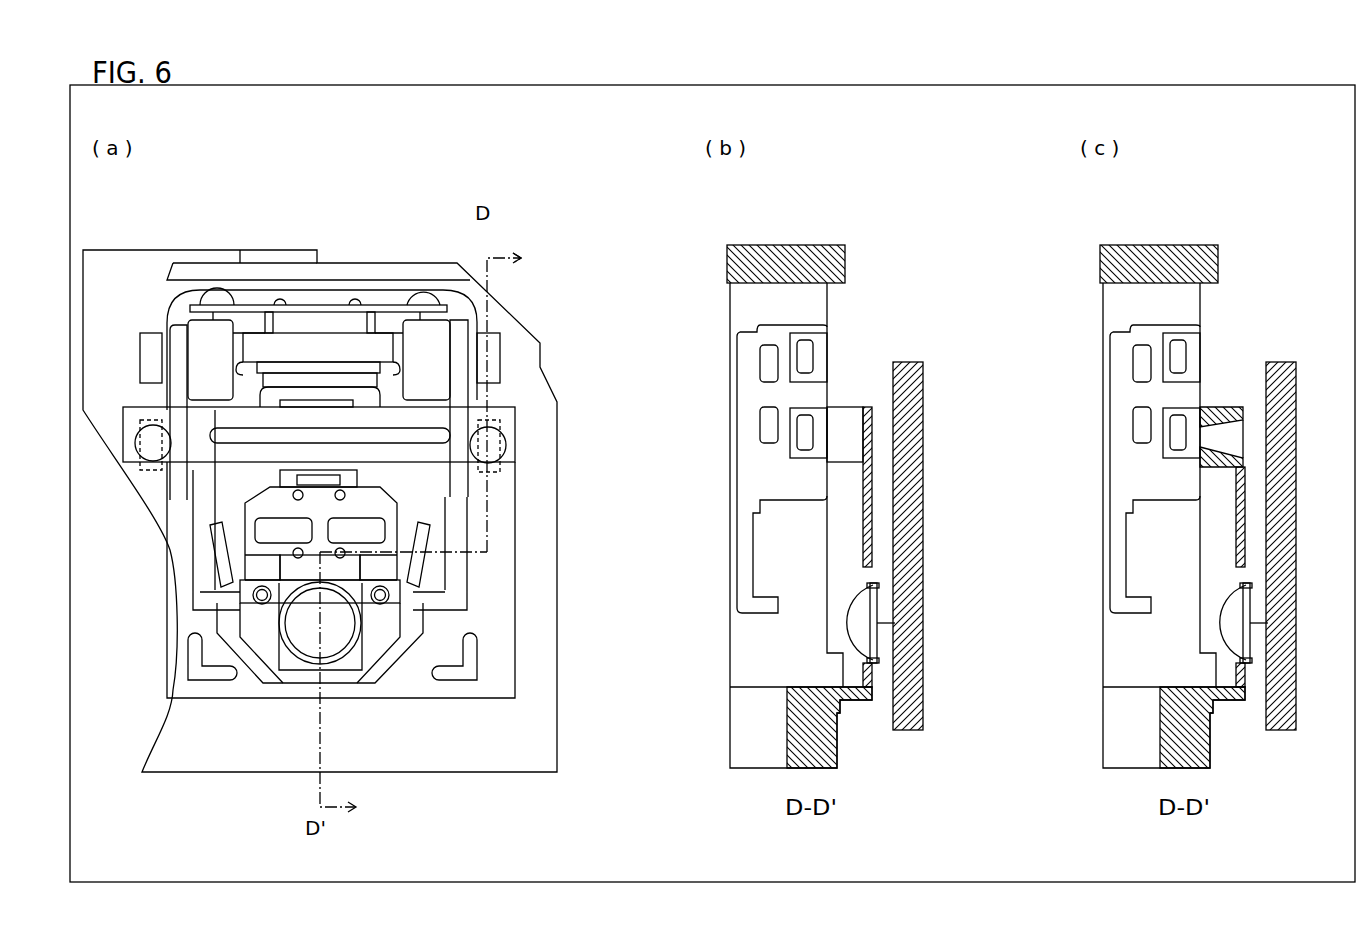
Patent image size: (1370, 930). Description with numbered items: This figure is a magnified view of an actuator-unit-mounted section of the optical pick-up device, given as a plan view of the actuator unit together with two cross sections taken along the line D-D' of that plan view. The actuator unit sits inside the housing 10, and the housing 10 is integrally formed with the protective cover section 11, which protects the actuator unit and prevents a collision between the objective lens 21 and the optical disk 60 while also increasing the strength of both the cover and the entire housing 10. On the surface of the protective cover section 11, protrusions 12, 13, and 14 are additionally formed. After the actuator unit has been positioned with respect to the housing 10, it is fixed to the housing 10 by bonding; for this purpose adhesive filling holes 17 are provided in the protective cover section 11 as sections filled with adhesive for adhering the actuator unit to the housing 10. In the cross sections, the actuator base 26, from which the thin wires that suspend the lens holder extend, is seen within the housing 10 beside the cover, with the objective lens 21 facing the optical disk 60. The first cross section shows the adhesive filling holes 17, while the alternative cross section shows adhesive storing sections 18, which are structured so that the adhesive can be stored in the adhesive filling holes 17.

The housing 10 is at (133, 263).
The protective cover section 11 is at (498, 623).
The protrusion 12 is at (197, 653).
The protrusion 13 is at (475, 655).
The protrusion 14 is at (410, 433).
The adhesive filling hole 17 is at (155, 440).
The adhesive storing section 18 is at (1240, 435).
The objective lens 21 is at (303, 643).
The actuator base 26 is at (745, 395).
The optical disk 60 is at (910, 717).